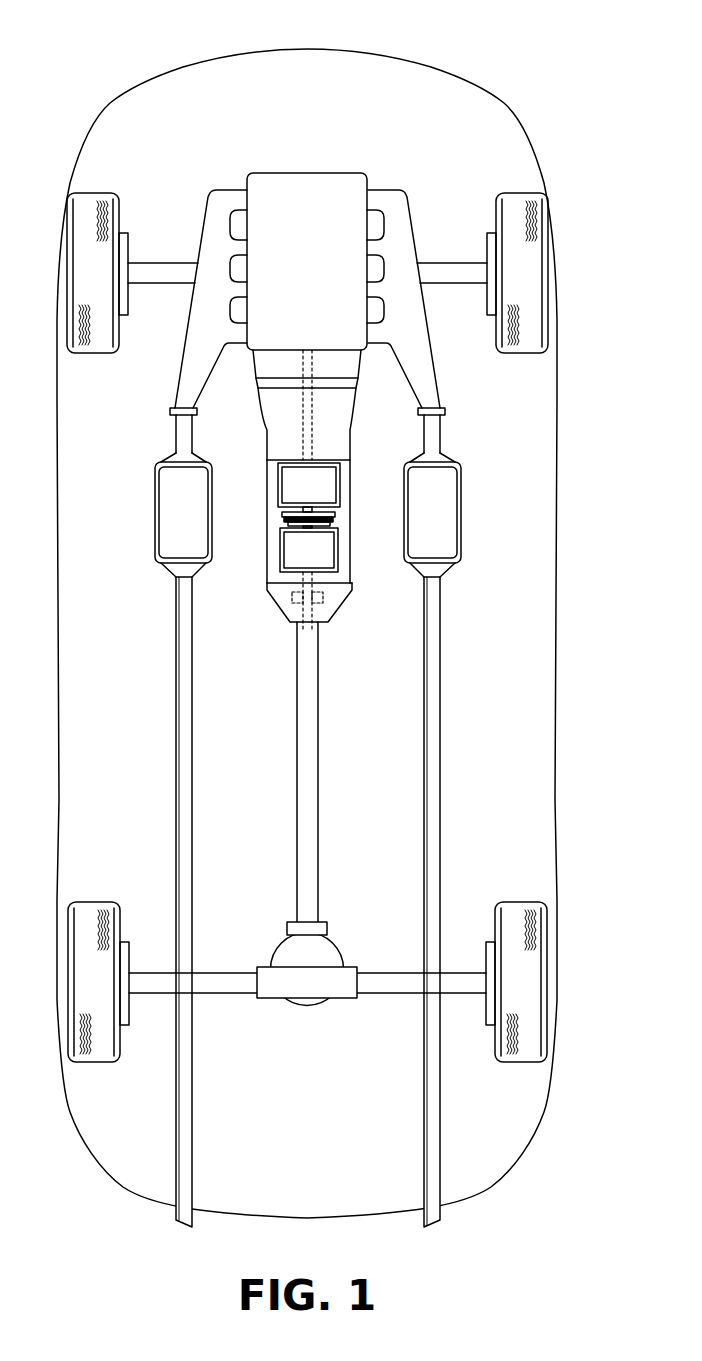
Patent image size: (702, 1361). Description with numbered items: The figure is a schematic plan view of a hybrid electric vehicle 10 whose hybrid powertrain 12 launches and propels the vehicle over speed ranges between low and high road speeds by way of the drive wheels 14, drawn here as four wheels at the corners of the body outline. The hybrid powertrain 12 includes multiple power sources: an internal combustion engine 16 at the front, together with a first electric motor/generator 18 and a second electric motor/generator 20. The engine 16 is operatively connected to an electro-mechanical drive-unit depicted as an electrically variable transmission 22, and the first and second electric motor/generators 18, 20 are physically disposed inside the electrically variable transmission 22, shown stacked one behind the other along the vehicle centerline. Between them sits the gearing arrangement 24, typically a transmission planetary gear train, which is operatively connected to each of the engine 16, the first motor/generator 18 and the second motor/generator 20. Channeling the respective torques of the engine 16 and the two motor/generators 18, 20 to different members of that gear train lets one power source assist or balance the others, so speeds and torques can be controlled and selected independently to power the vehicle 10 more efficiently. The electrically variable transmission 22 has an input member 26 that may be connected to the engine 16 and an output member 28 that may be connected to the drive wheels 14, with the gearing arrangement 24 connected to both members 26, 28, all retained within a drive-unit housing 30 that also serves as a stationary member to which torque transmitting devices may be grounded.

The vehicle 10 is at (133, 44).
The hybrid powertrain 12 is at (246, 500).
The drive wheels 14 is at (86, 265).
The internal combustion engine 16 is at (296, 269).
The first electric motor/generator 18 is at (298, 496).
The second electric motor/generator 20 is at (298, 561).
The electrically variable transmission 22 is at (359, 439).
The gearing arrangement 24 is at (322, 513).
The input member 26 is at (317, 362).
The output member 28 is at (330, 626).
The drive-unit housing 30 is at (264, 477).